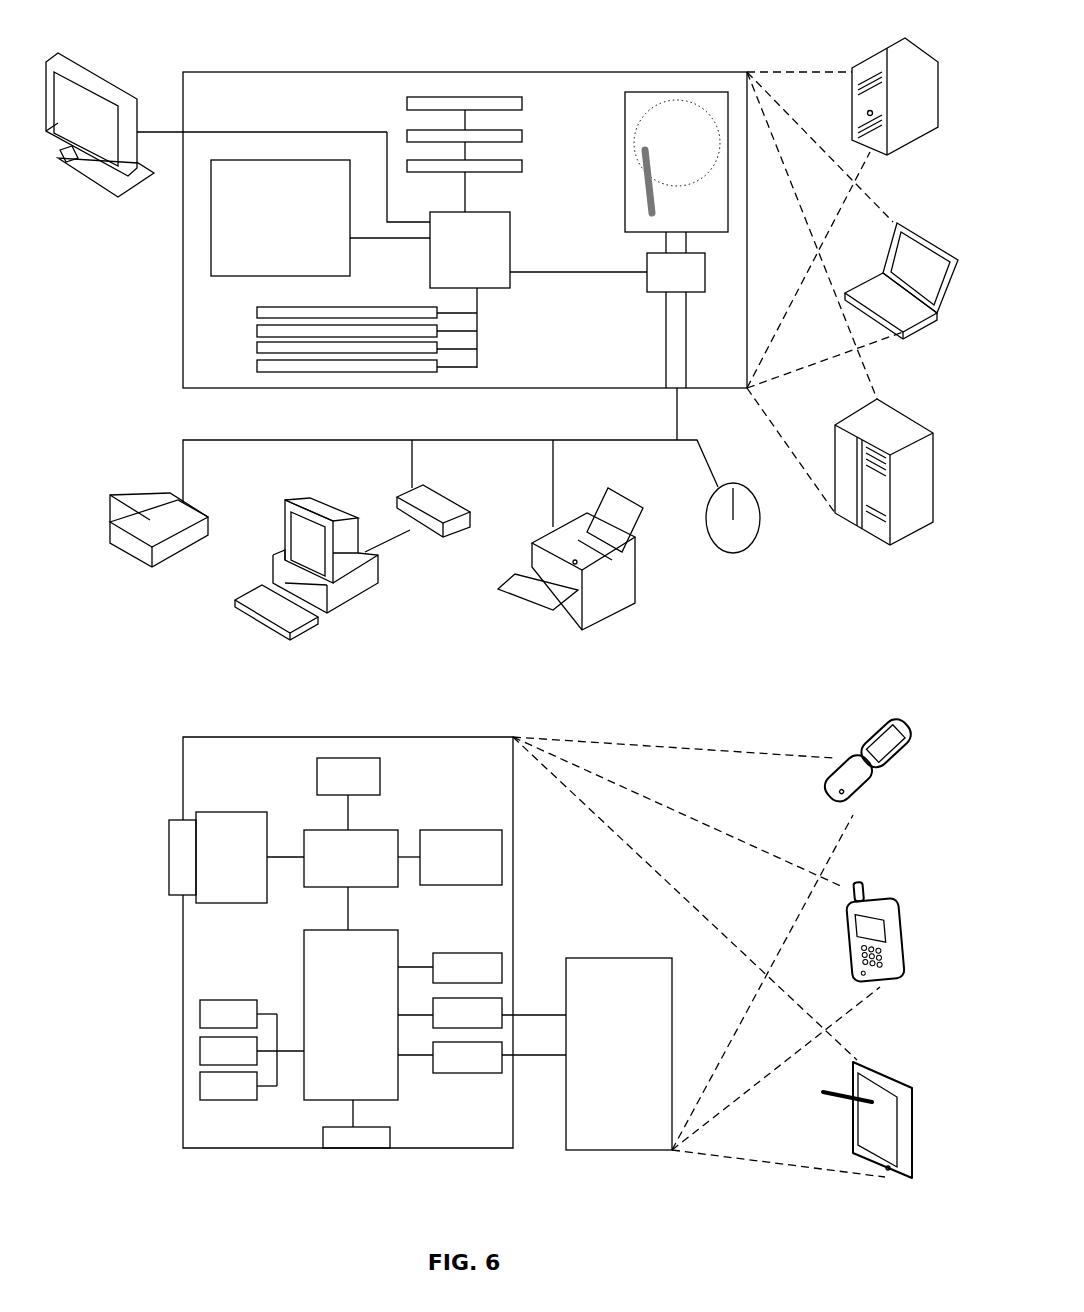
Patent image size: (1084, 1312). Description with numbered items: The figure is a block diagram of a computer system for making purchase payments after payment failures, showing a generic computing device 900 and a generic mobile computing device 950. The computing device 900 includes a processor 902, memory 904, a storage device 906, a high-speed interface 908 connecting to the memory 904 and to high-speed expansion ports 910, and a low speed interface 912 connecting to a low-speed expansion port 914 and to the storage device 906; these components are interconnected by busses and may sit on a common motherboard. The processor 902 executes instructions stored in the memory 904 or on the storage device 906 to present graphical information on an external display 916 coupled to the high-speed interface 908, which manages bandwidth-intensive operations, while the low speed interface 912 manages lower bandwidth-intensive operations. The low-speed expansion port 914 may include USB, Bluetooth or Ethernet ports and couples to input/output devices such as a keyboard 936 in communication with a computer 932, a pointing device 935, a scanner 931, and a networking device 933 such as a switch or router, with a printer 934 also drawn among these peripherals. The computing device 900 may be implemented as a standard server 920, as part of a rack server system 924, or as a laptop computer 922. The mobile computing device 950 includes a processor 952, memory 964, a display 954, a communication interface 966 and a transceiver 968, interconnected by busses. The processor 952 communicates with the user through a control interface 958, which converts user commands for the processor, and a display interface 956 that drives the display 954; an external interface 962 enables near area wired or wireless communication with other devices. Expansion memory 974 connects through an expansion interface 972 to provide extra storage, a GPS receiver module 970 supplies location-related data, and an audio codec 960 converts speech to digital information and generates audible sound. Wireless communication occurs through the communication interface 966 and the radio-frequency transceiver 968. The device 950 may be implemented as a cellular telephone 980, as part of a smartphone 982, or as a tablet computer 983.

The computing device 900 is at (441, 199).
The processor 902 is at (248, 264).
The memory 904 is at (522, 134).
The storage device 906 is at (636, 212).
The high-speed interface 908 is at (495, 232).
The high-speed expansion ports 910 is at (255, 336).
The low speed interface 912 is at (650, 282).
The low-speed expansion port 914 is at (667, 392).
The display 916 is at (100, 168).
The standard server 920 is at (917, 137).
The laptop computer 922 is at (927, 323).
The rack server system 924 is at (900, 530).
The scanner 931 is at (162, 562).
The computer 932 is at (343, 595).
The networking device 933 is at (445, 527).
The printer 934 is at (608, 607).
The pointing device 935 is at (747, 540).
The keyboard 936 is at (290, 640).
The mobile computer device 950 is at (307, 915).
The processor 952 is at (318, 1083).
The display 954 is at (586, 963).
The display interface 956 is at (465, 1067).
The control interface 958 is at (500, 1002).
The audio codec 960 is at (473, 967).
The external interface 962 is at (353, 1137).
The memory 964 is at (237, 1083).
The communication interface 966 is at (315, 877).
The transceiver 968 is at (447, 855).
The GPS receiver module 970 is at (317, 772).
The expansion interface 972 is at (243, 888).
The expansion memory 974 is at (178, 880).
The cellular telephone 980 is at (890, 792).
The smartphone 982 is at (893, 973).
The tablet computer 983 is at (893, 1177).